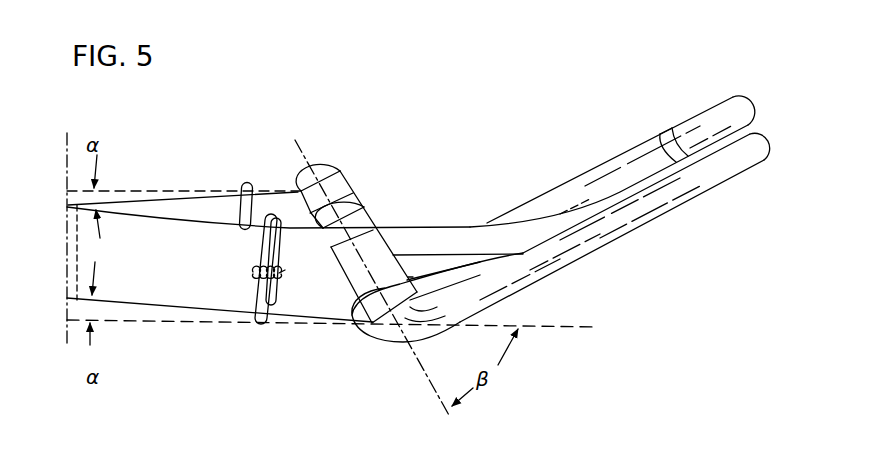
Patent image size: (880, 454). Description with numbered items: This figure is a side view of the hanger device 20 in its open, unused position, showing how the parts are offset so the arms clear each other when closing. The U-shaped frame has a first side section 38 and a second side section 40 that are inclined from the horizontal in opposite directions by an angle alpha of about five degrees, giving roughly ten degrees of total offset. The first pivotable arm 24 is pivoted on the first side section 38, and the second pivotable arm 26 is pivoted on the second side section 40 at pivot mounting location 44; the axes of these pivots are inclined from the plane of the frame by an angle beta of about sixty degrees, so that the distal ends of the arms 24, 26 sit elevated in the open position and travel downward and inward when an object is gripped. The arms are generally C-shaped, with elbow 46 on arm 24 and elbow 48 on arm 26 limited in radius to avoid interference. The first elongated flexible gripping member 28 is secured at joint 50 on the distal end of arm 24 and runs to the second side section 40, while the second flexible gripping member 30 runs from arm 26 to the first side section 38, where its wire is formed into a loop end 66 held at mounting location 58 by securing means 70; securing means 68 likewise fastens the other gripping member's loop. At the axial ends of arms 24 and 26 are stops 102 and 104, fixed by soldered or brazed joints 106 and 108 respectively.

The hanger device 20 is at (140, 146).
The second side section 40 is at (203, 308).
The second elongated resilient flexible gripping member 30 is at (454, 222).
The securing means 68 is at (243, 184).
The securing means 70 is at (253, 328).
The first side section 38 is at (276, 190).
The mounting location 58 is at (263, 323).
The loop end 66 is at (280, 272).
The soldered or brazed joint 106 is at (325, 168).
The stop 102 is at (348, 180).
The stop 104 is at (356, 208).
The soldered or brazed joint 108 is at (373, 220).
The first elongated resilient flexible gripping member 28 is at (550, 188).
The first pivotable arm 24 is at (700, 100).
The elbow 46 is at (744, 104).
The joint 50 is at (663, 128).
The second pivotable arm 26 is at (682, 210).
The elbow 48 is at (768, 142).
The pivot mounting location 44 is at (353, 302).